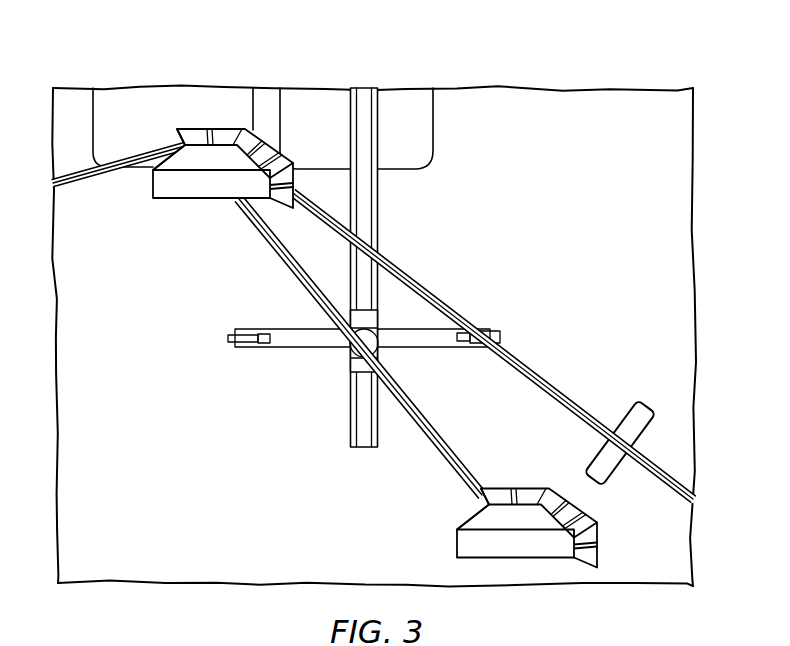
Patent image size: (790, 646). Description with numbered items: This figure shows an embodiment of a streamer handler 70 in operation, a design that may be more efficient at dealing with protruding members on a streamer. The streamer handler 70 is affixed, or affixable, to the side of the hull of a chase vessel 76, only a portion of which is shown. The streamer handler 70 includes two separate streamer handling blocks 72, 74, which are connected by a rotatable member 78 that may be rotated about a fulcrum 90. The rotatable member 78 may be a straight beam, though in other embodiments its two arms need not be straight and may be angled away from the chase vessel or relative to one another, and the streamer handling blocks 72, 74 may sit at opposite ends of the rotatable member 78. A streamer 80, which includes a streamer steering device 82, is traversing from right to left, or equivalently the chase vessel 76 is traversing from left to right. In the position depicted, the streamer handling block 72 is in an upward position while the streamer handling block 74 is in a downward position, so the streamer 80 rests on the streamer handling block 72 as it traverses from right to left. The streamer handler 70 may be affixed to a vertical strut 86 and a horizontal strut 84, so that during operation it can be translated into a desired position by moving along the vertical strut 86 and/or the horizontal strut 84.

The streamer handler 70 is at (155, 60).
The streamer handling block 72 is at (183, 190).
The streamer handling block 74 is at (459, 540).
The chase vessel 76 is at (126, 543).
The rotatable member 78 is at (283, 260).
The streamer 80 is at (555, 386).
The streamer steering device 82 is at (635, 407).
The horizontal strut 84 is at (292, 342).
The vertical strut 86 is at (380, 198).
The fulcrum 90 is at (387, 348).